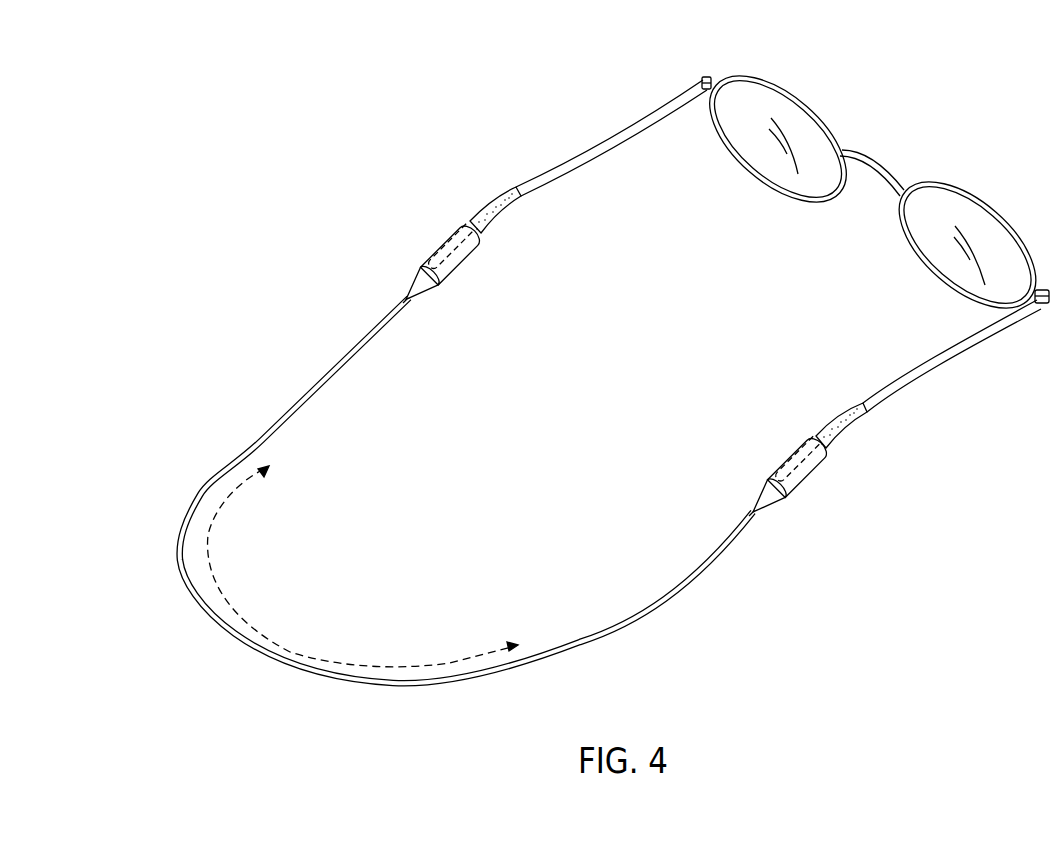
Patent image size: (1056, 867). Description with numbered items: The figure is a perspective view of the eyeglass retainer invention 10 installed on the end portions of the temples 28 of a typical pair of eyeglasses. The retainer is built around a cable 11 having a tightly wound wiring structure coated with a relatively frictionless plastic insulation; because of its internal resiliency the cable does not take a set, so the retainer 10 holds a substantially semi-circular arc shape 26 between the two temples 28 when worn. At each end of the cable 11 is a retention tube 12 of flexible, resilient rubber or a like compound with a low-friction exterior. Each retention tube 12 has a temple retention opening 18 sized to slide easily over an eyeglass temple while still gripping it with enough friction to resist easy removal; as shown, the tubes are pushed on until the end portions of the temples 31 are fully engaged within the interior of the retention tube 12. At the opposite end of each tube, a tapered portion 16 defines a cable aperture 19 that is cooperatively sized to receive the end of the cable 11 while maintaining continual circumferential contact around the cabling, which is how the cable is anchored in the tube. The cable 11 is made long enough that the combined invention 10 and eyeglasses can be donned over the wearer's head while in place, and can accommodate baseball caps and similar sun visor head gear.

The invention 10 is at (212, 291).
The cable 11 is at (178, 552).
The retention tube 12 is at (488, 267).
The tapered portion 16 is at (428, 290).
The temple retention opening 18 is at (468, 210).
The cable aperture 19 is at (405, 296).
The arc shape 26 is at (240, 617).
The temple 28 is at (607, 138).
The end portions of the temples 31 is at (497, 198).